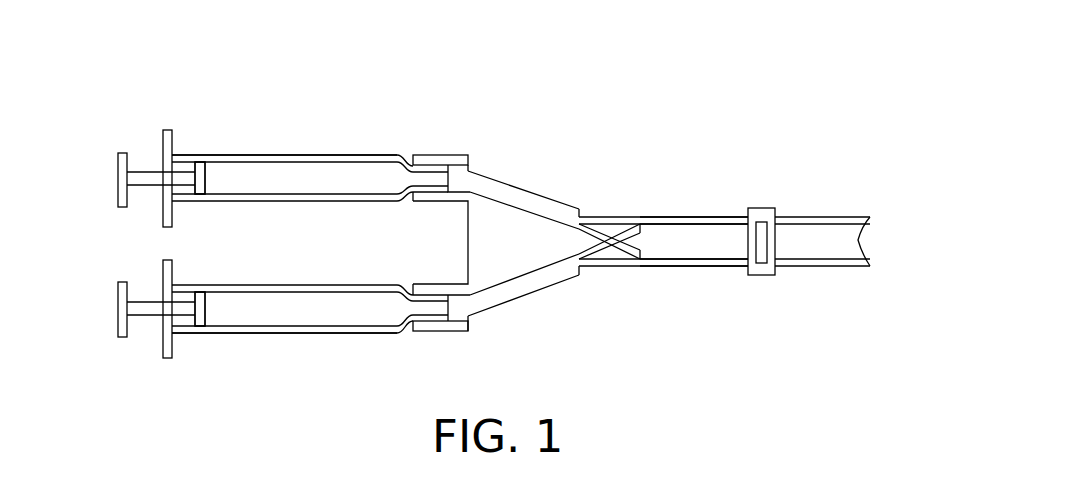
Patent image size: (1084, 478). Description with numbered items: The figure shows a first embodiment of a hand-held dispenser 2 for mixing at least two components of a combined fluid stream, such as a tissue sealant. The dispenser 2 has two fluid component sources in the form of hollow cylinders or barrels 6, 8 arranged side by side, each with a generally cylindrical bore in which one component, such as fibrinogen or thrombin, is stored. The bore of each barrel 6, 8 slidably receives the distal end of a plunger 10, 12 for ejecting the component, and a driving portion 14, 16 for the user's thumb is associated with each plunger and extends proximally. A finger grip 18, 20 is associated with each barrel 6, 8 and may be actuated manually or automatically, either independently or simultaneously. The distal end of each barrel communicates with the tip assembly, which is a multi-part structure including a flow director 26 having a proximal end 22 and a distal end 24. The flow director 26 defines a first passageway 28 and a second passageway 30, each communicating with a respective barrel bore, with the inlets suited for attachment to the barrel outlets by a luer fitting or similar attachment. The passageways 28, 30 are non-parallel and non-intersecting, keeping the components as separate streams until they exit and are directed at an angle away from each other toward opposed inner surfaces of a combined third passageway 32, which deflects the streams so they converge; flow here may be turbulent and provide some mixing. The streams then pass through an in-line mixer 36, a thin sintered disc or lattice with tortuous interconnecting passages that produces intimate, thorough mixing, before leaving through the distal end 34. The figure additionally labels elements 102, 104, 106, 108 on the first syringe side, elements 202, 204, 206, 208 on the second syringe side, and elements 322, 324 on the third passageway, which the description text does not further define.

The dispenser 2 is at (338, 76).
The barrel 6 is at (278, 153).
The barrel 8 is at (280, 286).
The plunger 10 is at (199, 163).
The plunger 12 is at (198, 291).
The driving portion 14 is at (121, 152).
The driving portion 16 is at (121, 282).
The finger grip 18 is at (168, 130).
The finger grip 20 is at (174, 350).
The proximal end 22 is at (425, 156).
The distal end 24 is at (603, 219).
The flow director 26 is at (545, 198).
The first passageway 28 is at (503, 197).
The second passageway 30 is at (525, 278).
The third passageway 32 is at (670, 235).
The distal end 34 is at (847, 264).
The in-line mixer 36 is at (756, 206).
The first syringe barrel 102 is at (325, 177).
The first syringe outlet 104 is at (440, 173).
The first piston 106 is at (204, 178).
The first plunger rod 108 is at (143, 187).
The second syringe barrel 202 is at (337, 294).
The second syringe outlet 204 is at (430, 312).
The second piston 206 is at (205, 309).
The second plunger rod 208 is at (147, 317).
The outlet tube upper wall 322 is at (722, 226).
The outlet tube lower wall 324 is at (728, 258).